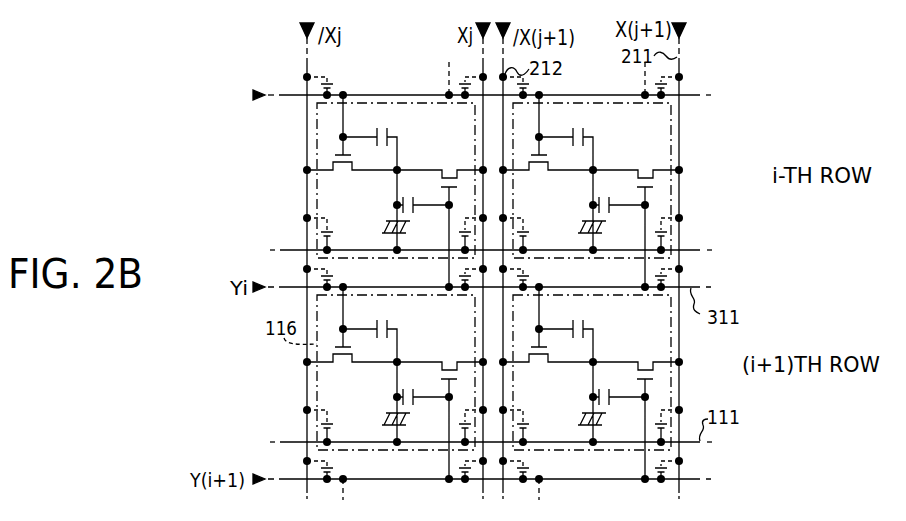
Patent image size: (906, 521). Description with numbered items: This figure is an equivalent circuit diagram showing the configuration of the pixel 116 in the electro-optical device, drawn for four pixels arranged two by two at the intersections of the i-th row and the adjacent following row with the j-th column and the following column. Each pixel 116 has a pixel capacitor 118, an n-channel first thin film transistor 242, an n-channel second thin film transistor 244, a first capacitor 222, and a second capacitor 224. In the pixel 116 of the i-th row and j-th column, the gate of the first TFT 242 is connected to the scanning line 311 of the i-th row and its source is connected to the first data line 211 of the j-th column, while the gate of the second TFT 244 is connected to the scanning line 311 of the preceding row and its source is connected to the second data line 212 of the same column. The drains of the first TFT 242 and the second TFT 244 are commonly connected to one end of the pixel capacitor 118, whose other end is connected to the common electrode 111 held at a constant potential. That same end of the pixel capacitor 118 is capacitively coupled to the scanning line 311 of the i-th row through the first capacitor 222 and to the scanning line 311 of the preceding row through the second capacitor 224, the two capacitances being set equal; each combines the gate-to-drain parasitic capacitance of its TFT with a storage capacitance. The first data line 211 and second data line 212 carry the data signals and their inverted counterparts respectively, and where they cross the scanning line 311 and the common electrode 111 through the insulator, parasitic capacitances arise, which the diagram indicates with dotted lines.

The common electrode 111 is at (700, 249).
The scanning line 311 is at (699, 96).
The pixel 116 is at (317, 152).
The pixel capacitor 118 is at (385, 226).
The first capacitor 222 is at (418, 191).
The second capacitor 224 is at (388, 137).
The first thin film transistor 242 is at (454, 176).
The second thin film transistor 244 is at (351, 170).
The first data line 211 is at (481, 57).
The second data line 212 is at (309, 74).